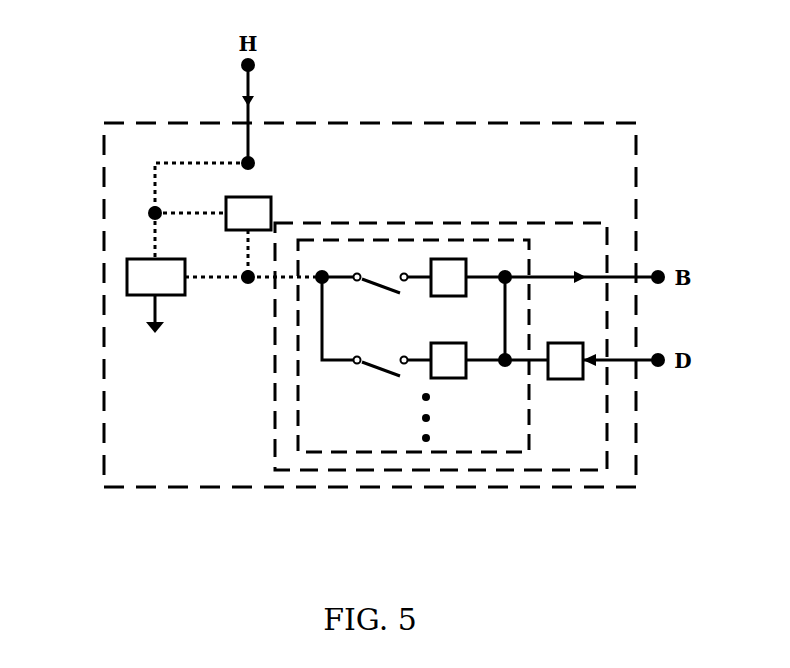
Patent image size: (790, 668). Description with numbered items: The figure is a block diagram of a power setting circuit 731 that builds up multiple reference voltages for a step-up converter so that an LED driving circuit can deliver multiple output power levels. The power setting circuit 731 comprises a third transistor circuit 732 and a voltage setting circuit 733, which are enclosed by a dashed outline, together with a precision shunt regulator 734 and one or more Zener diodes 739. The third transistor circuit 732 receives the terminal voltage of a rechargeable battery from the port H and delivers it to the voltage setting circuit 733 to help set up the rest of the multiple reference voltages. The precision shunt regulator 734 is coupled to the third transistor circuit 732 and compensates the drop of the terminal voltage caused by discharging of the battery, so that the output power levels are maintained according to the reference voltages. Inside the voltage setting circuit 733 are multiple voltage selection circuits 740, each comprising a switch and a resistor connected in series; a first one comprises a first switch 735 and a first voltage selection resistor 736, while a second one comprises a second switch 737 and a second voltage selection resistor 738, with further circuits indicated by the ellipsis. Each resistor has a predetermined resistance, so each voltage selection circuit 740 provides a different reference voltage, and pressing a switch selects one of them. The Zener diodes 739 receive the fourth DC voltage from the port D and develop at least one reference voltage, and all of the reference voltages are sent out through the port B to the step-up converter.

The power setting circuit 731 is at (413, 118).
The third transistor circuit 732 is at (263, 197).
The voltage setting circuit 733 is at (440, 474).
The precision shunt regulator 734 is at (133, 295).
The first switch 735 is at (378, 279).
The first voltage selection resistor 736 is at (447, 260).
The second switch 737 is at (372, 372).
The second voltage selection resistor 738 is at (455, 380).
The Zener diodes 739 is at (572, 380).
The voltage selection circuits 740 is at (496, 457).